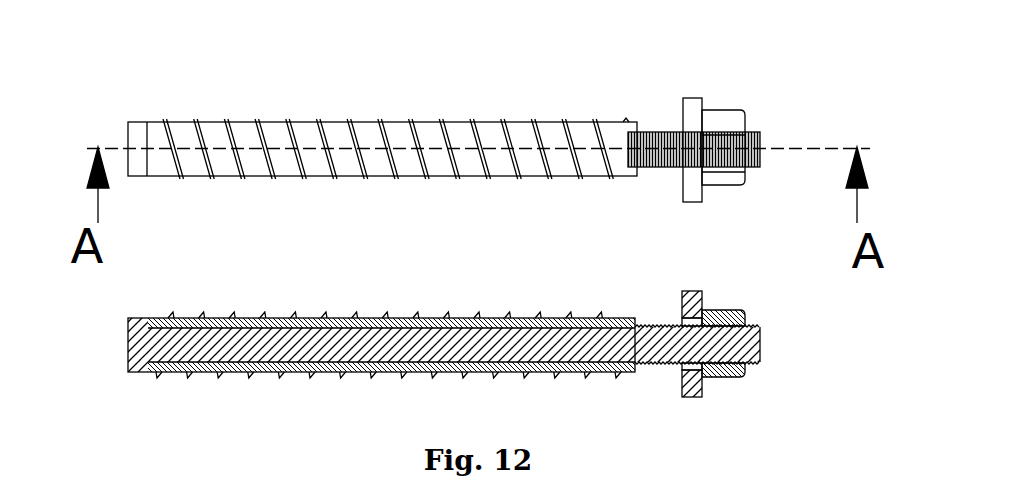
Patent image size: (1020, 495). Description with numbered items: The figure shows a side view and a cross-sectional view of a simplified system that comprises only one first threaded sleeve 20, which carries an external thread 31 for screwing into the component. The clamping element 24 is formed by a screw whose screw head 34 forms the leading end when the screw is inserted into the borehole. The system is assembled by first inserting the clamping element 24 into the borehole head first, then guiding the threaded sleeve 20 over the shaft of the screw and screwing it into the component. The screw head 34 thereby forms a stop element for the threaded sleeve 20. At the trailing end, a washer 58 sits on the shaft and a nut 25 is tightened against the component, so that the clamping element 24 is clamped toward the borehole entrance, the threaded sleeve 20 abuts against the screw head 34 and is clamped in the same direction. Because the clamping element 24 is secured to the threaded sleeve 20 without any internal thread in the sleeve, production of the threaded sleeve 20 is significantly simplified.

The first threaded sleeve 20 is at (339, 95).
The clamping element 24 is at (662, 130).
The nut 25 is at (727, 118).
The external thread 31 is at (270, 178).
The screw head 34 is at (137, 340).
The washer 58 is at (688, 97).